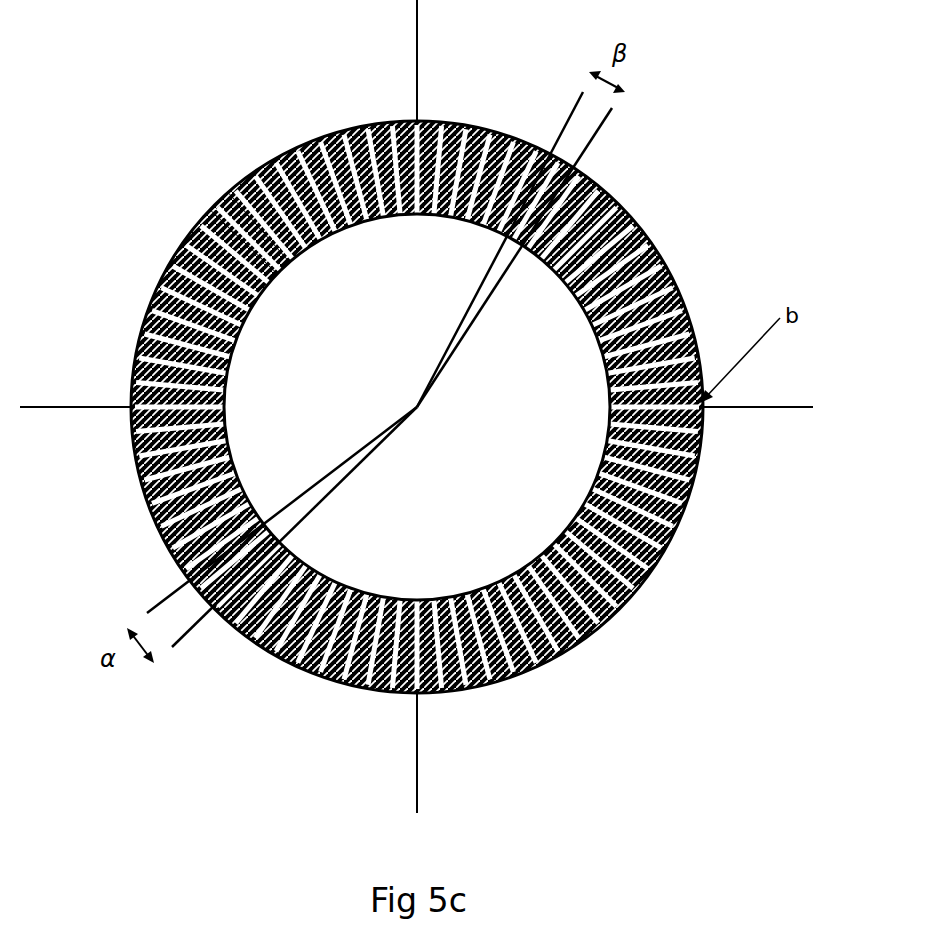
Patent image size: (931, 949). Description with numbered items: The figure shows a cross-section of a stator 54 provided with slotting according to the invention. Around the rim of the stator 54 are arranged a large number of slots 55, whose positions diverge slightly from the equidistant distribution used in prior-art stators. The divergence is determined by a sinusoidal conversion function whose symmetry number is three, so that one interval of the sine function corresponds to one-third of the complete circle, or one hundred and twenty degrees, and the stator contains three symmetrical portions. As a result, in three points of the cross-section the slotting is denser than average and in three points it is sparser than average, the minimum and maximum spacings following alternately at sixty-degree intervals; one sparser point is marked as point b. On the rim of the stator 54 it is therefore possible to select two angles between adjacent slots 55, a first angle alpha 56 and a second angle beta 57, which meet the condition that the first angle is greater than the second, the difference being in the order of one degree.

The stator 54 is at (417, 359).
The slots 55 is at (218, 223).
The angle α 56 is at (257, 510).
The angle β 57 is at (500, 249).